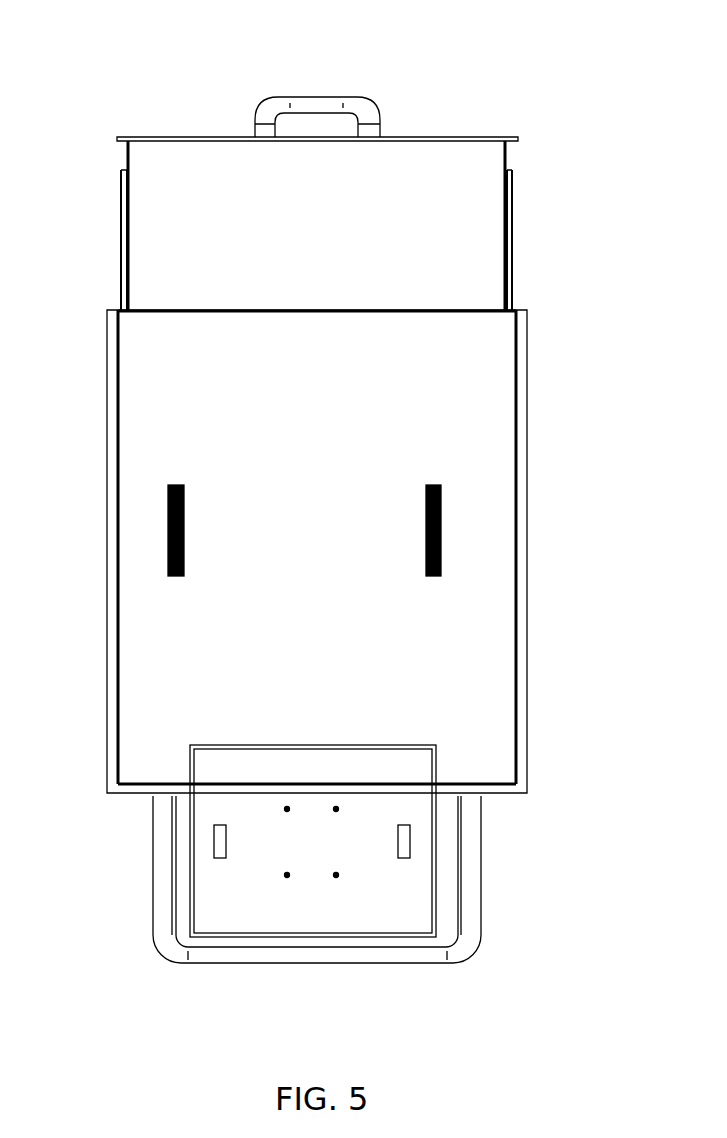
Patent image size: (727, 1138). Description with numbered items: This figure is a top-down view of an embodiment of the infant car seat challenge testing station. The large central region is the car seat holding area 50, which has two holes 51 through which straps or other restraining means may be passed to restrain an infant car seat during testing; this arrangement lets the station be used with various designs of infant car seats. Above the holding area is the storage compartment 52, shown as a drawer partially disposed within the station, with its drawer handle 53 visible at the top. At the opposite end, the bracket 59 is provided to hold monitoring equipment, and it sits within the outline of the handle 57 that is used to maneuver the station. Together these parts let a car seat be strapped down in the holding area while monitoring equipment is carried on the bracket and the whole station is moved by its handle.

The car seat holding area 50 is at (424, 376).
The holes 51 is at (167, 527).
The storage compartment 52 is at (426, 244).
The handle 53 is at (311, 97).
The handle 57 is at (481, 885).
The bracket 59 is at (350, 842).